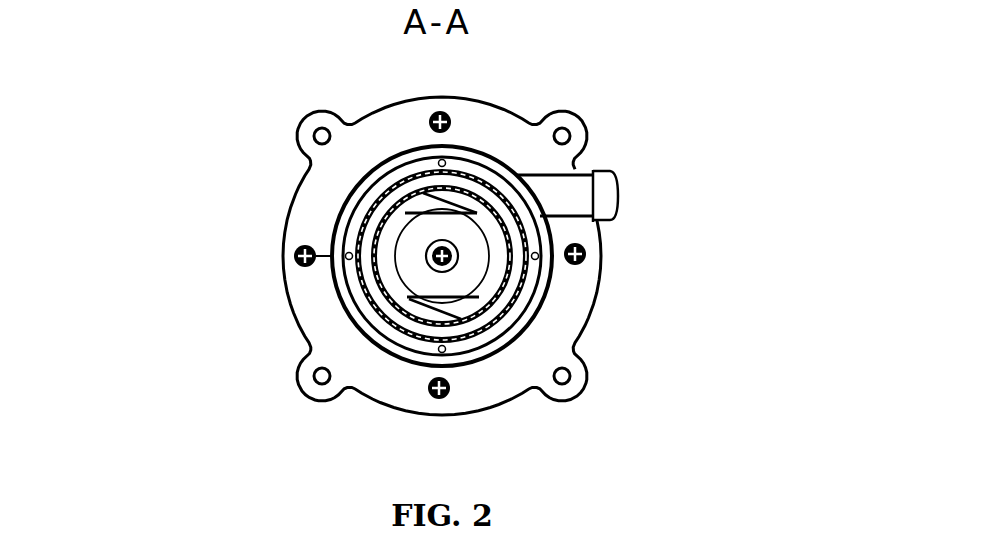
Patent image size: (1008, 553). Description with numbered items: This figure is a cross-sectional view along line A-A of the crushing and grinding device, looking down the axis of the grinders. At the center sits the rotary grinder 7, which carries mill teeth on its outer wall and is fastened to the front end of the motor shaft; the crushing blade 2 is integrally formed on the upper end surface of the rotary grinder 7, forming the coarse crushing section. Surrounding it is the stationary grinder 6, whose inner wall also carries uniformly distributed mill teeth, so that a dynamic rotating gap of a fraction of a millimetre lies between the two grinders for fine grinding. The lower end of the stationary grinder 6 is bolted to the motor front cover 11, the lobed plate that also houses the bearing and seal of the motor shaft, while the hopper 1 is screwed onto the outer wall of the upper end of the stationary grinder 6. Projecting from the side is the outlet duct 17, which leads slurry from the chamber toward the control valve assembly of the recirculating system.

The motor front cover 11 is at (335, 172).
The rotary grinder 7 is at (405, 235).
The hopper 1 is at (300, 251).
The stationary grinder 6 is at (378, 315).
The outlet duct 17 is at (600, 198).
The crushing blade 2 is at (452, 312).